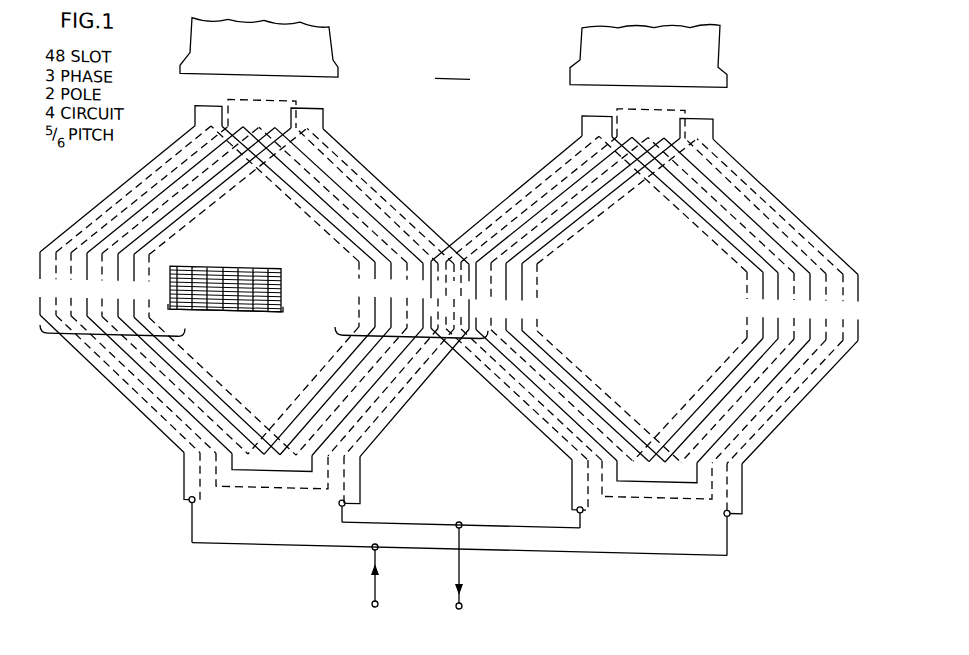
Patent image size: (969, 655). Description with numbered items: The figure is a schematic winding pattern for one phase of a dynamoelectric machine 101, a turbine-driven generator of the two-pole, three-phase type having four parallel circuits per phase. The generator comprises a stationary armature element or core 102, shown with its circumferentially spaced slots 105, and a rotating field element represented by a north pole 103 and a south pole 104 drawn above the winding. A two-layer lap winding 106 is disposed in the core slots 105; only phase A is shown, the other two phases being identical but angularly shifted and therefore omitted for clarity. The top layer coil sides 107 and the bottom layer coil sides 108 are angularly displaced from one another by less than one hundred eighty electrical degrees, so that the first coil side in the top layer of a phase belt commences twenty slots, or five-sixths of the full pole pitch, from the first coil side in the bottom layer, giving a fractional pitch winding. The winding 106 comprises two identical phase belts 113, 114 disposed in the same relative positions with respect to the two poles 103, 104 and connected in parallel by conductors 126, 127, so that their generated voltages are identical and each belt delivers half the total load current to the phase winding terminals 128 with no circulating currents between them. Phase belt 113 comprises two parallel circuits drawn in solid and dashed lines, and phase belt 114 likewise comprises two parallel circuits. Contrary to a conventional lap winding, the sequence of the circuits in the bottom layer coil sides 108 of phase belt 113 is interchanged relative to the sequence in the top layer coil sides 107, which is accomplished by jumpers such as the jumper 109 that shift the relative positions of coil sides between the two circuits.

The dynamoelectric machine 101 is at (453, 70).
The core 102 is at (232, 262).
The north pole 103 is at (330, 70).
The south pole 104 is at (715, 73).
The slots 105 is at (222, 305).
The winding 106 is at (467, 216).
The top layer coil sides 107 is at (120, 334).
The bottom layer coil sides 108 is at (395, 330).
The jumper 109 is at (226, 94).
The phase belt 113 is at (121, 177).
The phase belt 114 is at (549, 160).
The conductor 126 is at (545, 541).
The conductor 127 is at (516, 513).
The phase winding terminals 128 is at (378, 599).